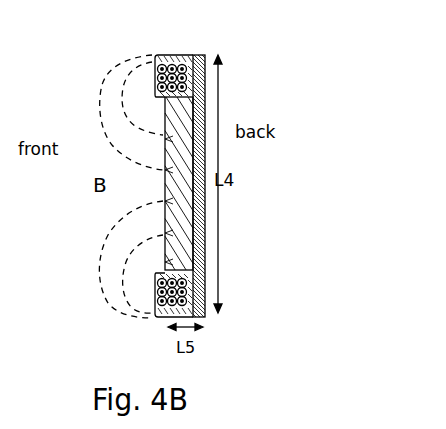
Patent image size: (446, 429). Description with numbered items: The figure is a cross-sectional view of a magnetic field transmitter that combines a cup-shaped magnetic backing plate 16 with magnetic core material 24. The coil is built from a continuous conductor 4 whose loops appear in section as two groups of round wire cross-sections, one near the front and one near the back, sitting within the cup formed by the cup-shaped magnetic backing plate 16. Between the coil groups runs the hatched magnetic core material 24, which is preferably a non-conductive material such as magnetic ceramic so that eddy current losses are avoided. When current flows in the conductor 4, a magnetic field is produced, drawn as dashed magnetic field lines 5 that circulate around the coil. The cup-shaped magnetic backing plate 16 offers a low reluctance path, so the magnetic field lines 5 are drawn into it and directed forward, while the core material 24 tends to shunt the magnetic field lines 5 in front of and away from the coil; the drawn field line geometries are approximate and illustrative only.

The conductor 4 is at (157, 68).
The magnetic field lines 5 is at (100, 82).
The cup-shaped magnetic backing plate 16 is at (197, 54).
The magnetic core material 24 is at (166, 214).